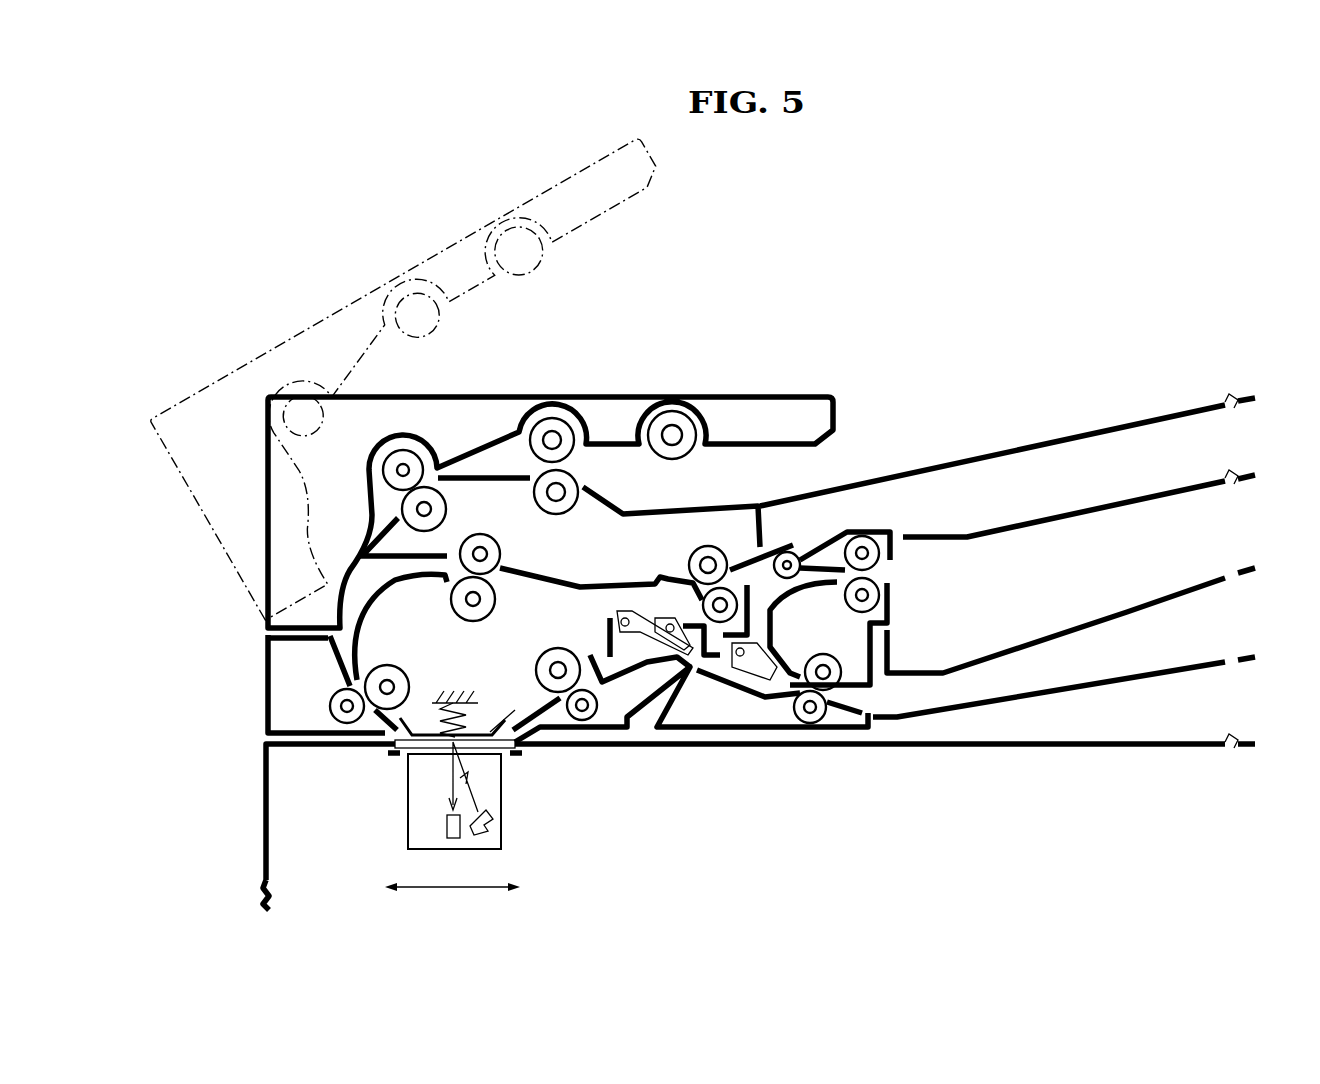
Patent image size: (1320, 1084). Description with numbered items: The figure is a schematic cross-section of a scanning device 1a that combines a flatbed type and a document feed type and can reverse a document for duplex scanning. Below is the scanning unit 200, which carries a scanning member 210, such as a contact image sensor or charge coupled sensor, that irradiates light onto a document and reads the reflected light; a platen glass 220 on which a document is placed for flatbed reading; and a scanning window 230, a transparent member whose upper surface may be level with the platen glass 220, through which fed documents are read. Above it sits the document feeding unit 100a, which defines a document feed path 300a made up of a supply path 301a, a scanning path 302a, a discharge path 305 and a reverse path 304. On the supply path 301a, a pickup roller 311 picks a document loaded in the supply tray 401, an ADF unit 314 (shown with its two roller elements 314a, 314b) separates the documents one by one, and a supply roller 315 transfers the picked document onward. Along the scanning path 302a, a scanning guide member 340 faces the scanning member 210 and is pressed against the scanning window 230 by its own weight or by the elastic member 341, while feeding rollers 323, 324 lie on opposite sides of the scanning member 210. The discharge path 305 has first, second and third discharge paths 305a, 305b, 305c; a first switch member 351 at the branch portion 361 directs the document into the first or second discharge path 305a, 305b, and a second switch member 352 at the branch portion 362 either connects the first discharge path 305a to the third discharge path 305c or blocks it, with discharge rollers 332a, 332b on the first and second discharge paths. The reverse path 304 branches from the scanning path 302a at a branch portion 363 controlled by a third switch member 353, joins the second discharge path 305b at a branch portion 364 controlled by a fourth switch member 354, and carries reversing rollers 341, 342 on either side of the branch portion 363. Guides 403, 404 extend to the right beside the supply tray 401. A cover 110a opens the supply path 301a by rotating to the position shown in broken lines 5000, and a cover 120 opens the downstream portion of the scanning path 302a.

The scanning device 1a is at (692, 541).
The broken lines 5000 is at (452, 379).
The cover 110a is at (495, 512).
The document feed path 300a is at (302, 574).
The supply roller 315 is at (416, 420).
The reversing roller 341 is at (478, 536).
The ADF unit 314 is at (506, 525).
The roller 314a is at (543, 406).
The roller 314b is at (568, 432).
The pickup roller 311 is at (672, 405).
The supply path 301a is at (487, 505).
The reversing roller 342 is at (671, 531).
The supply tray 401 is at (1007, 454).
The guide 403 is at (1071, 606).
The guide 404 is at (1064, 670).
The reverse path 304 is at (601, 568).
The branch portion 363 is at (692, 580).
The third switch member 353 is at (661, 606).
The fourth switch member 354 is at (780, 543).
The branch portion 364 is at (780, 629).
The discharge roller 332b is at (892, 558).
The discharge path 305 is at (893, 642).
The second discharge path 305b is at (896, 595).
The third discharge path 305c is at (869, 630).
The first discharge path 305a is at (876, 669).
The discharge roller 332a is at (867, 681).
The cover 120 is at (691, 727).
The branch portion 361 is at (640, 721).
The first switch member 351 is at (679, 703).
The second switch member 352 is at (748, 715).
The branch portion 362 is at (812, 739).
The feeding roller 324 is at (566, 668).
The scanning path 302a is at (525, 677).
The scanning guide member 340 is at (452, 693).
The feeding roller 323 is at (401, 641).
The document feeding unit 100a is at (263, 684).
The scanning unit 200 is at (696, 822).
The platen glass 220 is at (845, 769).
The scanning window 230 is at (436, 781).
The scanning member 210 is at (488, 795).